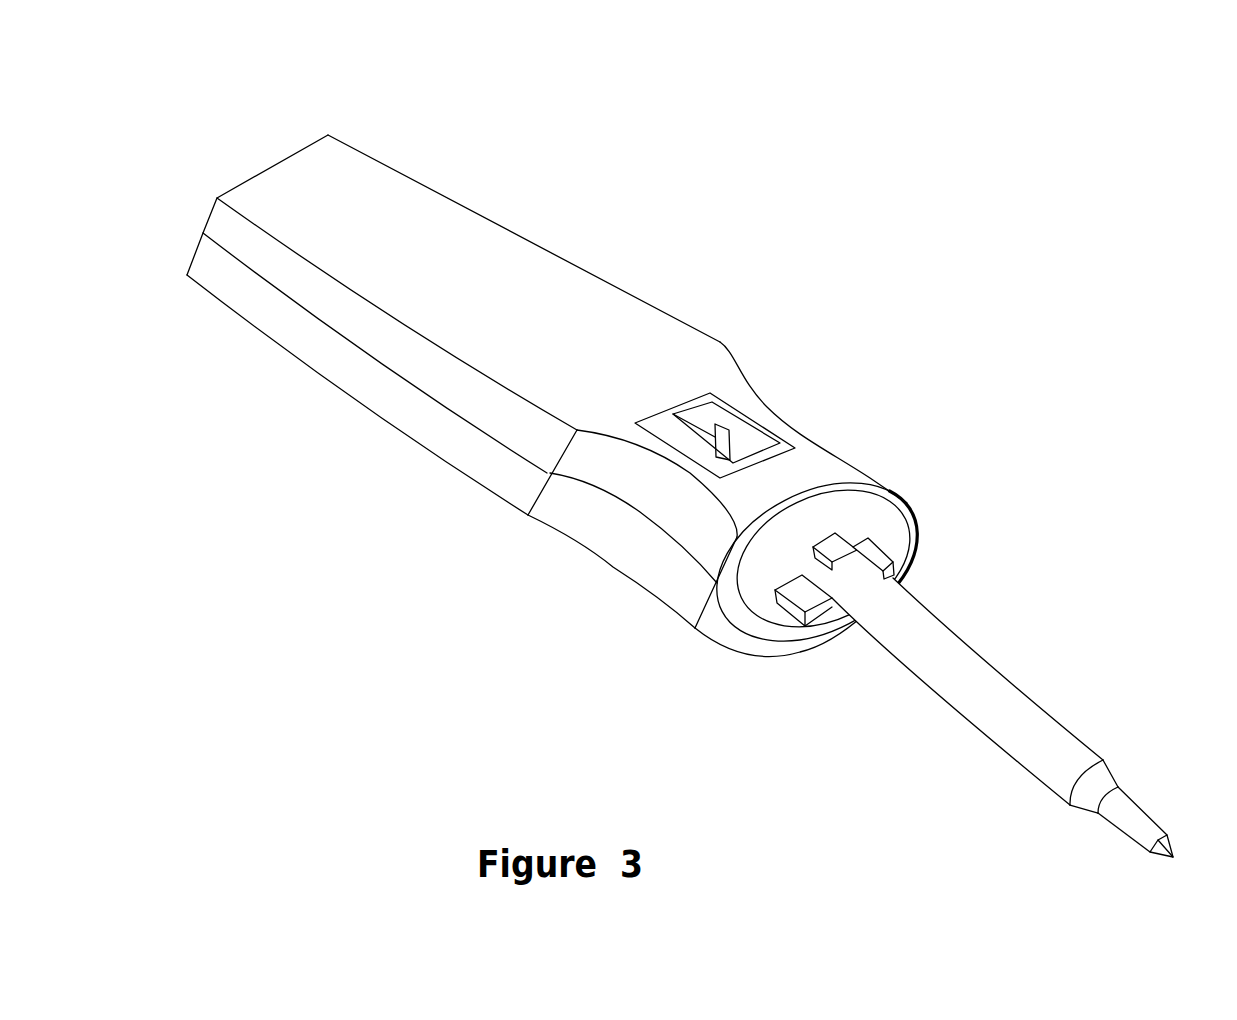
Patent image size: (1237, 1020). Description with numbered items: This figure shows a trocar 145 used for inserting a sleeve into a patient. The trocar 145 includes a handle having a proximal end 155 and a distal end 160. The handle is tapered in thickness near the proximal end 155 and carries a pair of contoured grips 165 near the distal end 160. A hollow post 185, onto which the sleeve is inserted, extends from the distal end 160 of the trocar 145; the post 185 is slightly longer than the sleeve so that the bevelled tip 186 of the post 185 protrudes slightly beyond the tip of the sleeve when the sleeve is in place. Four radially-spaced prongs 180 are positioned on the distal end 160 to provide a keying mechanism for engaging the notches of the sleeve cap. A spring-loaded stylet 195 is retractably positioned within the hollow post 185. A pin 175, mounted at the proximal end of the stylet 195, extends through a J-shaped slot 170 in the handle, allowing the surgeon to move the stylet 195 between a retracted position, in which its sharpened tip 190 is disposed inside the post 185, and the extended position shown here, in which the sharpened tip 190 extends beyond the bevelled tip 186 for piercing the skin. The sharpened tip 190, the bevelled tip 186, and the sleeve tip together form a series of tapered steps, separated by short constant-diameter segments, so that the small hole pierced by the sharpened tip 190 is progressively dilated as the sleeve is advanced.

The trocar 145 is at (625, 143).
The proximal end 155 is at (305, 145).
The distal end 160 is at (900, 520).
The contoured grips 165 is at (590, 523).
The J-shaped slot 170 is at (717, 415).
The pin 175 is at (730, 430).
The prongs 180 is at (680, 313).
The hollow post 185 is at (998, 670).
The bevelled tip 186 is at (1115, 775).
The stylet 195 is at (1148, 810).
The sharpened tip 190 is at (1157, 857).